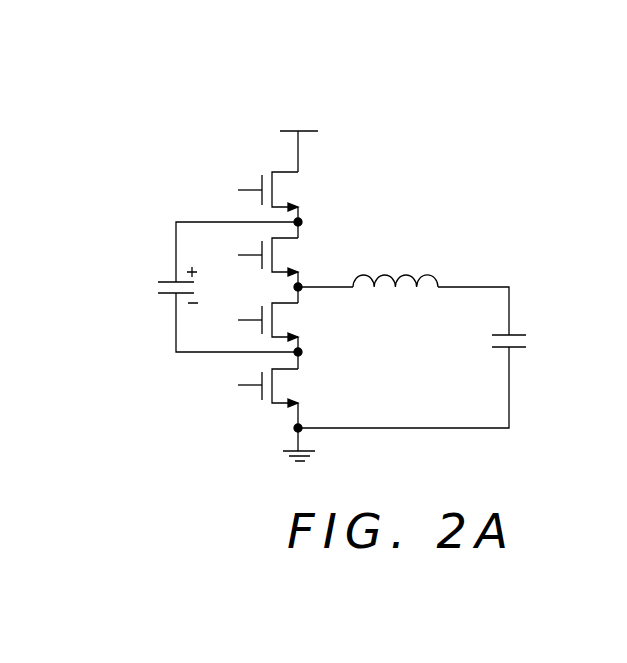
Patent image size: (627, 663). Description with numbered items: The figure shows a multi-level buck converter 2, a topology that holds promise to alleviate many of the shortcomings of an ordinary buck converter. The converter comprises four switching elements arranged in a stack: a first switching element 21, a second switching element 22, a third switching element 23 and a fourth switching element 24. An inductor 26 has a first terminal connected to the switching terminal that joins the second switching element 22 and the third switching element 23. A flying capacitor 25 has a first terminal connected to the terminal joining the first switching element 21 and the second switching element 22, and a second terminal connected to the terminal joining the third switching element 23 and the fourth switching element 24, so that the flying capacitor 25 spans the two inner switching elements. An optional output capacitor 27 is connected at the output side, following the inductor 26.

The multi-level buck converter 2 is at (356, 99).
The first switching element 21 is at (236, 187).
The second switching element 22 is at (300, 255).
The third switching element 23 is at (293, 320).
The fourth switching element 24 is at (293, 385).
The flying capacitor 25 is at (151, 286).
The inductor 26 is at (415, 276).
The output capacitor 27 is at (486, 342).